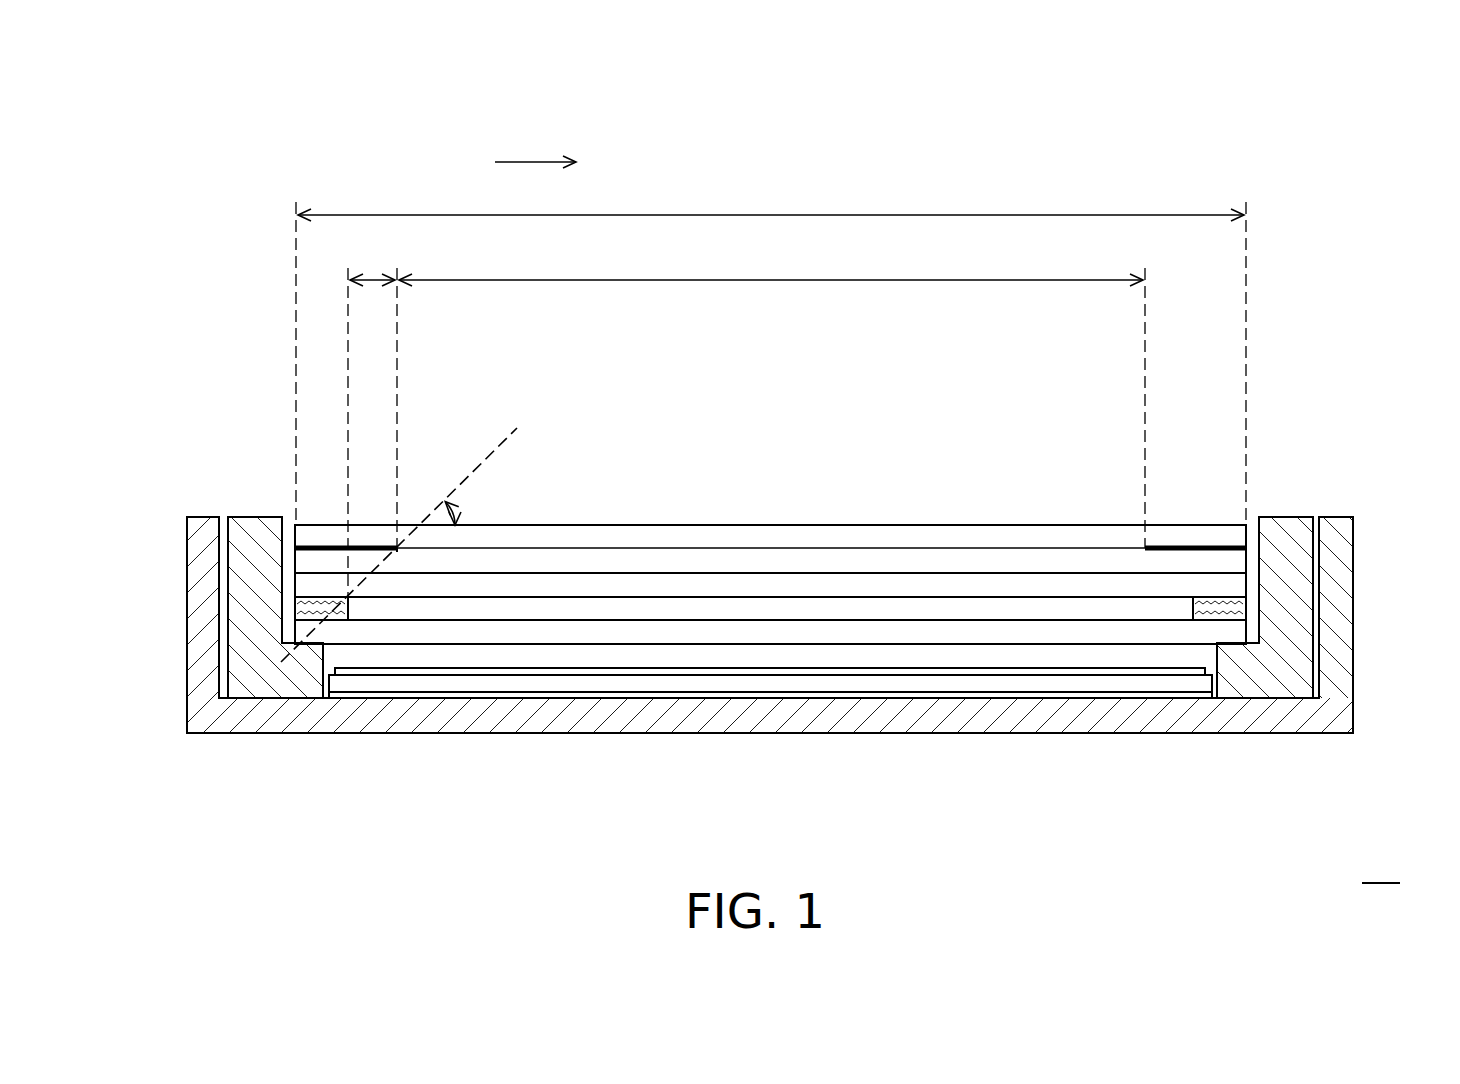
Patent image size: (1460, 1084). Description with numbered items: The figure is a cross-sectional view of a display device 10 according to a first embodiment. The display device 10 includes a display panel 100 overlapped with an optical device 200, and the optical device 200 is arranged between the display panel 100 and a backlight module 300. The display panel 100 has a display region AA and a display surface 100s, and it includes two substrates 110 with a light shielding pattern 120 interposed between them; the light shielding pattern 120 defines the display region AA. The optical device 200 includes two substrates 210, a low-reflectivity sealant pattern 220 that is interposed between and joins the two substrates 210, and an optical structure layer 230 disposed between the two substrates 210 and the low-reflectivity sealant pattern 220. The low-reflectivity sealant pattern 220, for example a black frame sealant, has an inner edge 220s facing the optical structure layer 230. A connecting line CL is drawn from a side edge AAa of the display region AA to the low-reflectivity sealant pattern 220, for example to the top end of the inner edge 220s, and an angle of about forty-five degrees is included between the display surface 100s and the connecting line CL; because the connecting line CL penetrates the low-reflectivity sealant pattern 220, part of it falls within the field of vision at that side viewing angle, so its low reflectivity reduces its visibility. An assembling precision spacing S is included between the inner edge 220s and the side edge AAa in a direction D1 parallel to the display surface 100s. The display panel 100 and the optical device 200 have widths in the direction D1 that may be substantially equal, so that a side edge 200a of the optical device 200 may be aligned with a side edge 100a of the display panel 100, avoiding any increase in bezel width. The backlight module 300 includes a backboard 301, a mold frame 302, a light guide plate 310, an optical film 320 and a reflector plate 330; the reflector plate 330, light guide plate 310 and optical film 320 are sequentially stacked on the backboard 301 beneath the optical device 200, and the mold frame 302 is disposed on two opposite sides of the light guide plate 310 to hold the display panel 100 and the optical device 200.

The display device 10 is at (1381, 864).
The display panel 100 is at (1110, 440).
The substrates 110 is at (1010, 562).
The light shielding pattern 120 is at (1160, 548).
The side edge of the display panel 100a is at (293, 563).
The display surface 100s is at (628, 523).
The optical device 200 is at (1172, 812).
The substrates 210 is at (1062, 587).
The low-reflectivity sealant pattern 220 is at (1207, 608).
The inner edge 220s is at (350, 608).
The optical structure layer 230 is at (1150, 610).
The side edge of the optical device 200a is at (293, 585).
The backlight module 300 is at (140, 72).
The backboard 301 is at (787, 716).
The mold frame 302 is at (252, 682).
The light guide plate 310 is at (643, 683).
The optical film 320 is at (573, 672).
The reflector plate 330 is at (718, 694).
The side edge of the display region AAa is at (399, 550).
The display region AA is at (772, 394).
The assembling precision spacing S is at (372, 423).
The direction D1 is at (555, 161).
The connecting line CL is at (500, 446).